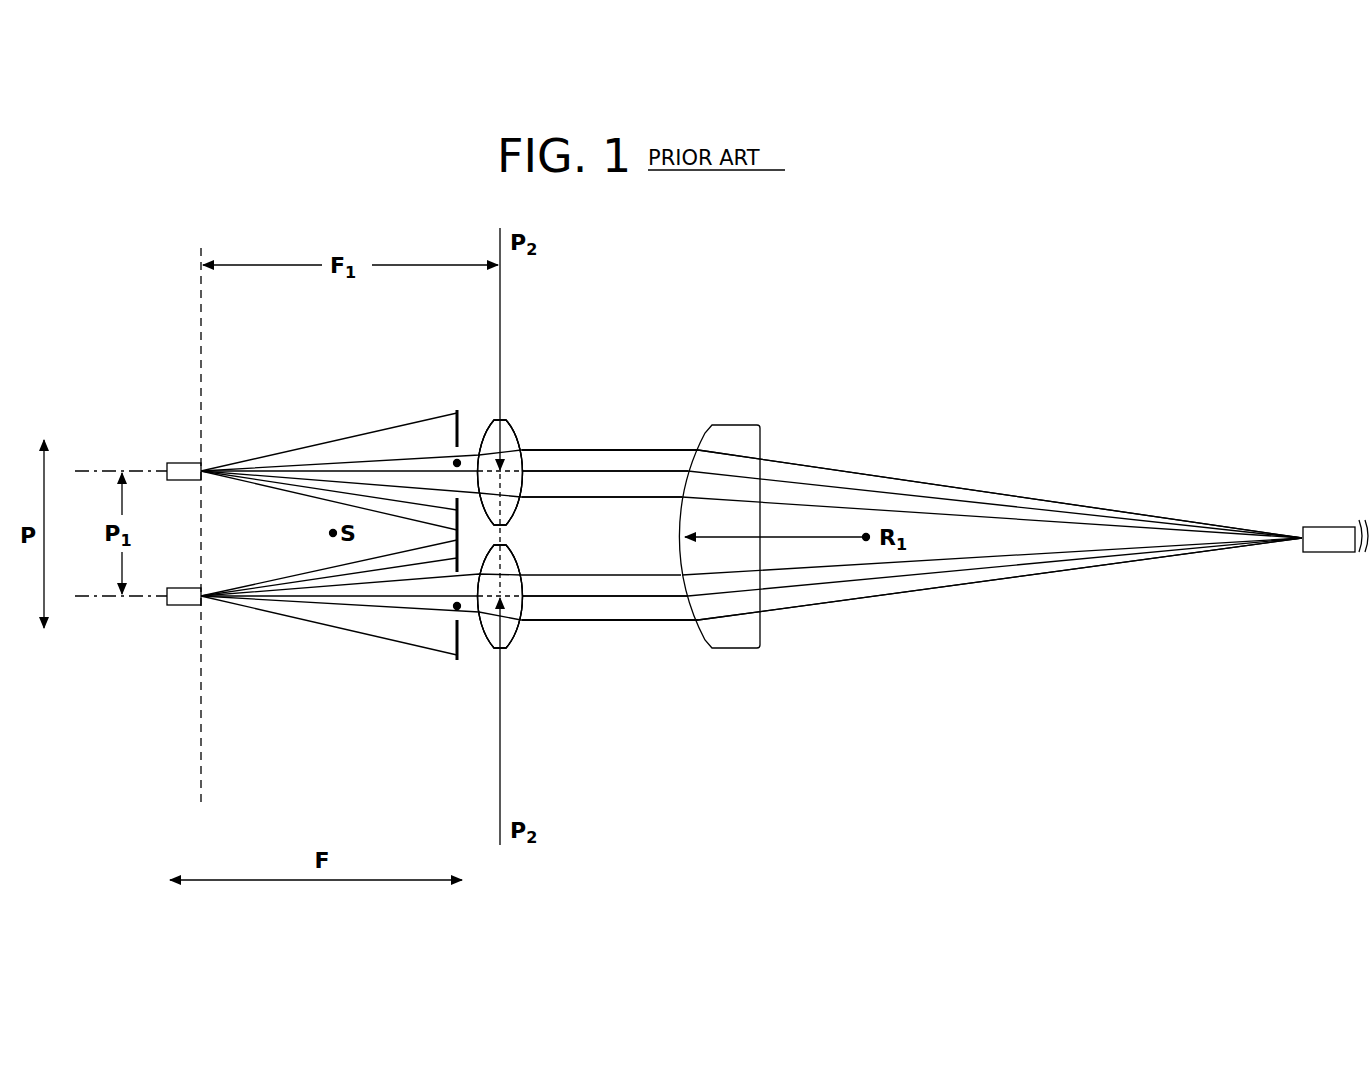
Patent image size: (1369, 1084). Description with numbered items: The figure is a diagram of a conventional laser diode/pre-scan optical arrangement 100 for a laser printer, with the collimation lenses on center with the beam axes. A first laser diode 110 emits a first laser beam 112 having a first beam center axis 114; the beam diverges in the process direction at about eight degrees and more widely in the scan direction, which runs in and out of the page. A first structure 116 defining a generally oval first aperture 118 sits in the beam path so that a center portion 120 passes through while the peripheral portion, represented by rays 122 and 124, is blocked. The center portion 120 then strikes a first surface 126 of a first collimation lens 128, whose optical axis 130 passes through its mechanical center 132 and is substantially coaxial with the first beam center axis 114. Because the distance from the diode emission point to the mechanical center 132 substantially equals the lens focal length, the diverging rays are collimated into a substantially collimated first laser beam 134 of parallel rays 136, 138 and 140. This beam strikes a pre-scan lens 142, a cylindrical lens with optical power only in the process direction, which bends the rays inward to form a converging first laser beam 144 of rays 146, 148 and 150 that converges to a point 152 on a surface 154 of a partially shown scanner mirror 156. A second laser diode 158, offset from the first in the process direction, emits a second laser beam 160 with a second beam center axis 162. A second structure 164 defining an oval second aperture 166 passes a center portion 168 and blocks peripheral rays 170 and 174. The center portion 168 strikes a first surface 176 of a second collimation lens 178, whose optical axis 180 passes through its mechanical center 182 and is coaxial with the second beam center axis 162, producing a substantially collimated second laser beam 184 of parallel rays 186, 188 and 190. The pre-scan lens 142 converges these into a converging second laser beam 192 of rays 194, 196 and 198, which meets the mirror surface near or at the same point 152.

The conventional laser diode/pre-scan optical arrangement 100 is at (167, 214).
The first laser diode 110 is at (180, 462).
The first laser beam 112 is at (337, 432).
The first beam center axis 114 is at (295, 467).
The first structure 116 is at (455, 434).
The first aperture 118 is at (457, 460).
The center portion of the first laser beam 120 is at (477, 424).
The peripheral ray of the first laser beam 122 is at (267, 458).
The peripheral ray of the first laser beam 124 is at (293, 494).
The first surface of the first collimation lens 126 is at (486, 420).
The first collimation lens 128 is at (507, 413).
The optical axis of the first collimation lens 130 is at (496, 478).
The mechanical center of the first collimation lens 132 is at (500, 473).
The substantially collimated first laser beam 134 is at (594, 444).
The parallel ray of the collimated first beam 136 is at (612, 448).
The parallel ray of the collimated first beam 138 is at (640, 471).
The parallel ray of the collimated first beam 140 is at (660, 496).
The pre-scan lens 142 is at (753, 416).
The converging first laser beam 144 is at (988, 485).
The ray of the converging first beam 146 is at (787, 460).
The ray of the converging first beam 148 is at (817, 487).
The ray of the converging first beam 150 is at (870, 502).
The point on the scanner mirror surface 152 is at (1298, 532).
The surface of the scanner mirror 154 is at (1300, 546).
The scanner mirror 156 is at (1329, 522).
The second laser diode 158 is at (175, 607).
The second laser beam 160 is at (287, 623).
The second beam center axis 162 is at (322, 600).
The second structure 164 is at (453, 633).
The second aperture 166 is at (457, 609).
The center portion of the second laser beam 168 is at (470, 612).
The peripheral ray of the second laser beam 170 is at (285, 582).
The peripheral ray of the second laser beam 174 is at (240, 612).
The first surface of the second collimation lens 176 is at (473, 631).
The second collimation lens 178 is at (512, 658).
The optical axis of the second collimation lens 180 is at (495, 597).
The mechanical center of the second collimation lens 182 is at (500, 598).
The substantially collimated second laser beam 184 is at (583, 639).
The parallel ray of the collimated second beam 186 is at (744, 537).
The parallel ray of the collimated second beam 188 is at (643, 598).
The parallel ray of the collimated second beam 190 is at (682, 622).
The converging second laser beam 192 is at (1052, 588).
The ray of the converging second beam 194 is at (828, 603).
The ray of the converging second beam 196 is at (882, 582).
The ray of the converging second beam 198 is at (945, 560).